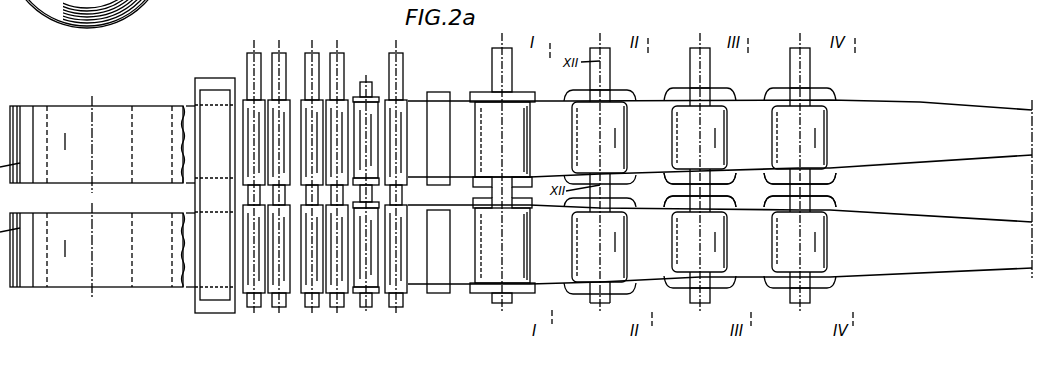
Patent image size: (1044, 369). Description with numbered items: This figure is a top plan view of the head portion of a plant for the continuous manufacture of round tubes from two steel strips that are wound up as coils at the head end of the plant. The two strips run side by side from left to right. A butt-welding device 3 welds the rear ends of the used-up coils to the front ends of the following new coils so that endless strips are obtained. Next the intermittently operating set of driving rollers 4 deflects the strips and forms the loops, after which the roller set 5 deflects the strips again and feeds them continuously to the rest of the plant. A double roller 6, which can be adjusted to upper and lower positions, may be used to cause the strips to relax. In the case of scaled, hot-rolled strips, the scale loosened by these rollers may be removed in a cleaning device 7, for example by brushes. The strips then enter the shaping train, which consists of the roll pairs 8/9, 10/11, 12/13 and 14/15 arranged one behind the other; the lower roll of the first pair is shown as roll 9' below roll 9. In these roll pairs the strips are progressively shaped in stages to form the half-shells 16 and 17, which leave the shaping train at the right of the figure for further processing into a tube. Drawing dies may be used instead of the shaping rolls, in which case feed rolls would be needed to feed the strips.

The butt-welding device 3 is at (204, 97).
The set of driving rollers 4 is at (276, 292).
The roller set 5 is at (335, 292).
The double roller 6 is at (363, 292).
The cleaning device 7 is at (438, 92).
The roll 8 is at (483, 183).
The roll 9 is at (502, 173).
The lower roller 9' is at (502, 264).
The roll 10 is at (613, 180).
The roll 11 is at (580, 118).
The roll 12 is at (718, 180).
The roll 13 is at (683, 120).
The roll 14 is at (820, 180).
The roll 15 is at (783, 120).
The half-shell 16 is at (989, 227).
The half-shell 17 is at (978, 152).